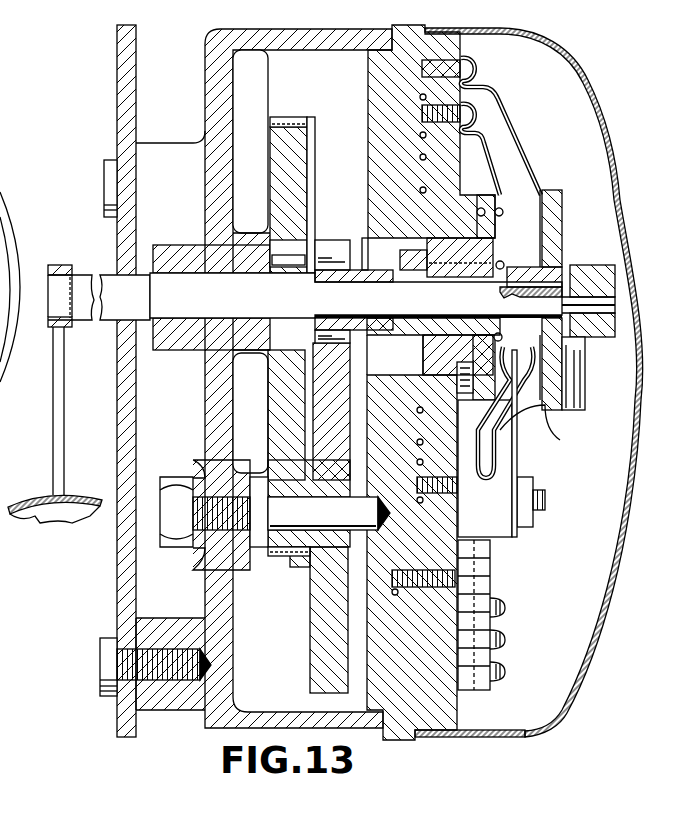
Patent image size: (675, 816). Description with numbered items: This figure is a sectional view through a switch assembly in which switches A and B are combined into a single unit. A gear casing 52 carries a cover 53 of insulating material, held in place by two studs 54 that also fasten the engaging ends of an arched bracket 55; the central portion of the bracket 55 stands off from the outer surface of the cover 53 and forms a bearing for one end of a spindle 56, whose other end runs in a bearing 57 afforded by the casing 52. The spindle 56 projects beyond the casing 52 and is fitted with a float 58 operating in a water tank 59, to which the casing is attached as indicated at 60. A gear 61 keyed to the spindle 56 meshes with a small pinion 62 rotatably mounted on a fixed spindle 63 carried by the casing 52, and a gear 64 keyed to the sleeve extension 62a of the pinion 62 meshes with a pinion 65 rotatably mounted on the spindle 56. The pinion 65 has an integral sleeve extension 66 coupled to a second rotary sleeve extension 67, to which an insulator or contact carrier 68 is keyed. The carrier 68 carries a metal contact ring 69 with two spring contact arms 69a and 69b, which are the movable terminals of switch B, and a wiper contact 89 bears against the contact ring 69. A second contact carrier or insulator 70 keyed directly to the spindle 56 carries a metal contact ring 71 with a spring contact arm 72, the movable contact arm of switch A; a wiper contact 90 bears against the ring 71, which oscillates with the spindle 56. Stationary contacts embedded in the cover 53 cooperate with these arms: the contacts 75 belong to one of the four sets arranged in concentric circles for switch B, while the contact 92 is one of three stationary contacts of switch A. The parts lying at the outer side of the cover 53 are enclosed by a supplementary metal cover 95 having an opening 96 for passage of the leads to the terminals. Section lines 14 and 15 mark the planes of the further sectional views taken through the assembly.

The section line 14- 14 is at (138, 24).
The movable terminal 15 is at (568, 78).
The gear casing 52 is at (207, 91).
The cover 53 is at (368, 79).
The studs 54 is at (422, 352).
The bracket 55 is at (598, 337).
The spindle 56 is at (305, 296).
The bearing 57 is at (154, 350).
The float 58 is at (45, 511).
The water tank 59 is at (116, 431).
The attachment 60 is at (173, 650).
The gear 61 is at (271, 160).
The pinion 62 is at (282, 553).
The sleeve extension 62a is at (305, 552).
The fixed spindle 63 is at (275, 503).
The gear 64 is at (310, 630).
The pinion 65 is at (330, 240).
The sleeve extension 66 is at (360, 253).
The rotary sleeve extension 67 is at (398, 265).
The contact carrier 68 is at (432, 364).
The contact ring 69 is at (497, 236).
The spring contact arm 69a is at (491, 149).
The spring contact arm 69b is at (497, 454).
The contact carrier 70 is at (556, 258).
The contact ring 71 is at (541, 245).
The spring contact arm 72 is at (543, 178).
The stationary contacts 75 is at (440, 104).
The wiper contact 89 is at (512, 484).
The wiper contact 90 is at (525, 420).
The stationary contact 92 is at (462, 51).
The supplementary metal cover 95 is at (629, 168).
The opening 96 is at (480, 737).
The switch A is at (526, 116).
The switch B is at (508, 172).